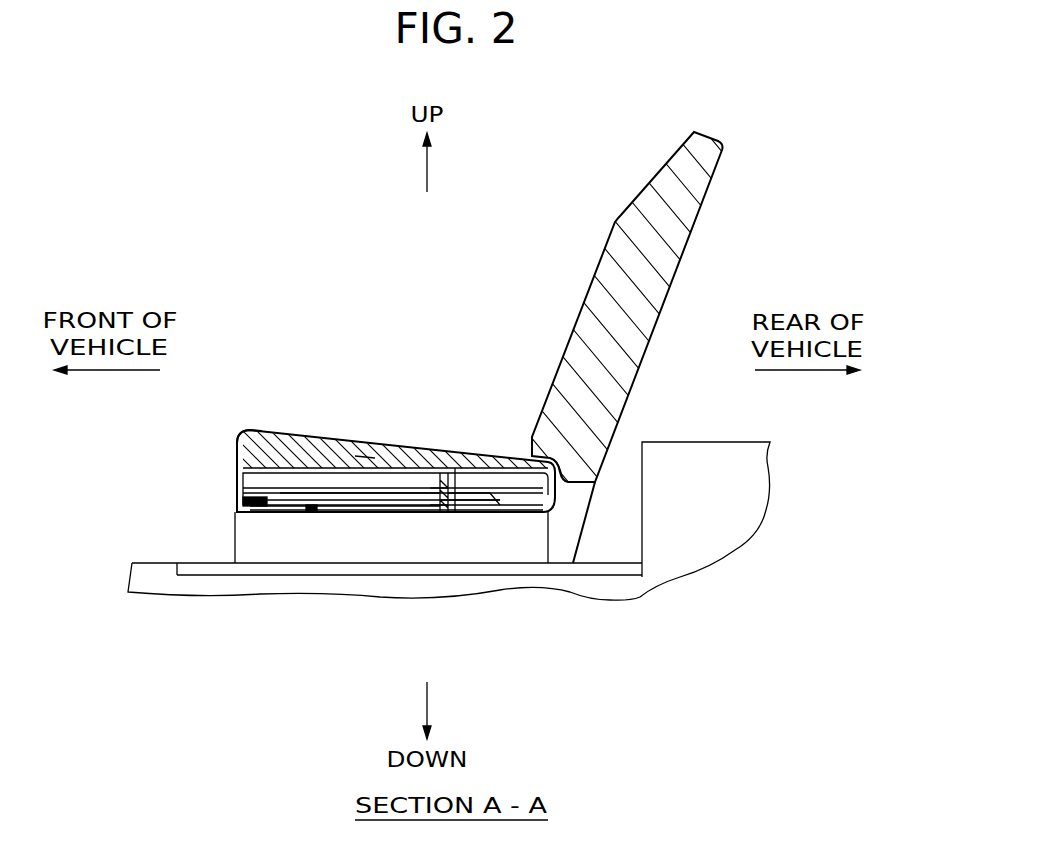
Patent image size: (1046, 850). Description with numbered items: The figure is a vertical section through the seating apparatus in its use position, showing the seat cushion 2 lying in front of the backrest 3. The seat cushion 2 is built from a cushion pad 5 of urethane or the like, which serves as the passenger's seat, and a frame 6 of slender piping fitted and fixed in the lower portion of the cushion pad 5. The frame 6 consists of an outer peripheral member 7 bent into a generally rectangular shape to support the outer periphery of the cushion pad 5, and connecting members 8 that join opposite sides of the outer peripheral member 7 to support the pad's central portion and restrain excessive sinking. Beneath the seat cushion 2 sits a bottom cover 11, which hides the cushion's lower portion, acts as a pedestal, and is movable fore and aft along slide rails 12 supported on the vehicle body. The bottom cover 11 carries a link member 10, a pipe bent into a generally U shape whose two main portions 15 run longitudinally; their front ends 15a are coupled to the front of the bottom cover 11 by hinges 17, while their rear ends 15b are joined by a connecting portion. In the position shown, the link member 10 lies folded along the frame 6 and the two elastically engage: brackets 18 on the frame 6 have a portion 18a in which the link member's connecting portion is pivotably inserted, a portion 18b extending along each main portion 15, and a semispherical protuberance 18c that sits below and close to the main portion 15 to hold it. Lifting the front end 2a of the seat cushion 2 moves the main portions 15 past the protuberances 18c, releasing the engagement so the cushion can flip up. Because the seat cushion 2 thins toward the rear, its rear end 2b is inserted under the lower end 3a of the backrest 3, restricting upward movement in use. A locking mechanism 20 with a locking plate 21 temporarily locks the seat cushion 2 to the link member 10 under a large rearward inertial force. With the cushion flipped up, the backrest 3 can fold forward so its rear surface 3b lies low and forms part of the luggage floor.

The seat cushion 2 is at (340, 437).
The front end of the seat cushion 2a is at (231, 434).
The rear end of the seat cushion 2b is at (558, 478).
The backrest 3 is at (640, 192).
The lower end of the backrest 3a is at (533, 452).
The rear surface of the backrest 3b is at (670, 293).
The cushion pad 5 is at (280, 437).
The frame 6 is at (460, 495).
The outer peripheral member 7 is at (231, 480).
The connecting members 8 is at (365, 457).
The link member 10 is at (360, 512).
The bottom cover 11 is at (233, 534).
The slide rails 12 is at (178, 563).
The main portions 15 is at (385, 513).
The front ends of the main portions 15a is at (251, 513).
The rear ends of the main portions 15b is at (447, 513).
The hinges 17 is at (263, 514).
The brackets 18 is at (450, 513).
The portion of the bracket 18a is at (467, 513).
The portion extending along the main portion 18b is at (442, 517).
The semispherical protuberance 18c is at (437, 517).
The locking mechanism 20 is at (312, 512).
The locking plate 21 is at (328, 514).